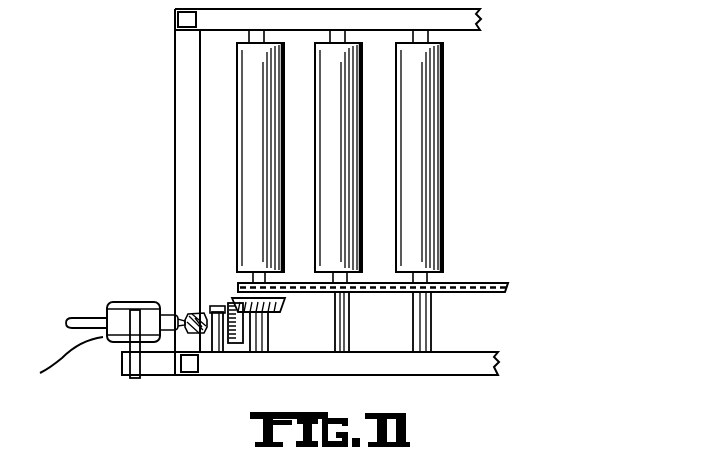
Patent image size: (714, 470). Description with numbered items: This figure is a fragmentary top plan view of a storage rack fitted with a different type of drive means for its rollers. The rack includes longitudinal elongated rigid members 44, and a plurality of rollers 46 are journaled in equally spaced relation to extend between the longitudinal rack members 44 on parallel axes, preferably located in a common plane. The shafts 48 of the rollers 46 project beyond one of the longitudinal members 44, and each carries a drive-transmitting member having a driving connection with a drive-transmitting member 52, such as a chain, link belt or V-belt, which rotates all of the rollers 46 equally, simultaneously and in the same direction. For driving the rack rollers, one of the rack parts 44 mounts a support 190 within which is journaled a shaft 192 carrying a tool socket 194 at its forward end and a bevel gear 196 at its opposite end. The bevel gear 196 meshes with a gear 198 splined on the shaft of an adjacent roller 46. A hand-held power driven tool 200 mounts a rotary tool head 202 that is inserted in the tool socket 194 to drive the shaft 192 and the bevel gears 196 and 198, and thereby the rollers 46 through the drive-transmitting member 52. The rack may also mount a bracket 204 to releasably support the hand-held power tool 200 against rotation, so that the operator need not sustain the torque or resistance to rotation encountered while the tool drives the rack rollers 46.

The longitudinal elongated rigid member 44 is at (483, 30).
The roller 46 is at (330, 191).
The shaft 48 is at (416, 332).
The drive-transmitting member 52 is at (507, 291).
The support 190 is at (218, 376).
The shaft 192 is at (222, 306).
The tool socket 194 is at (185, 318).
The bevel gear 196 is at (240, 345).
The gear 198 is at (283, 312).
The handheld power driven tool 200 is at (115, 312).
The rotary tool head 202 is at (168, 378).
The bracket 204 is at (133, 375).